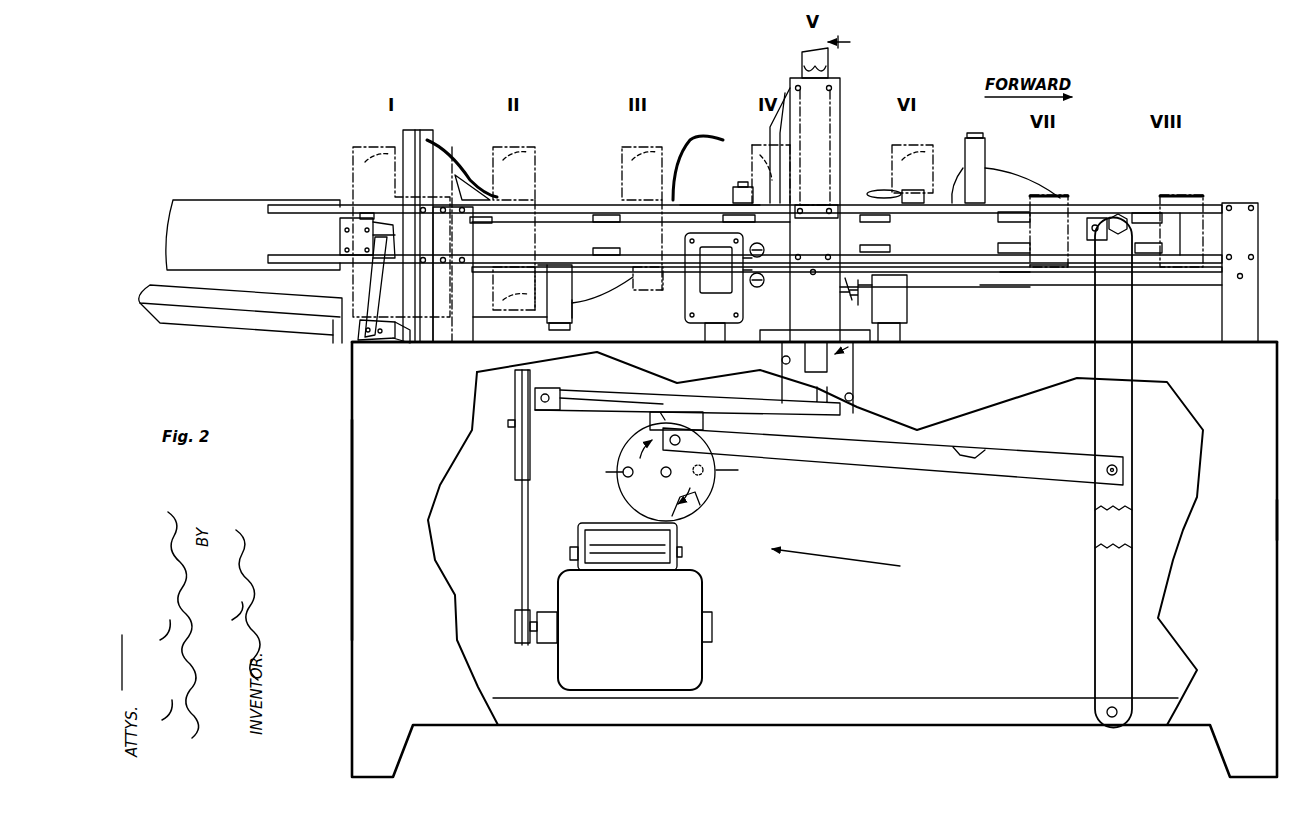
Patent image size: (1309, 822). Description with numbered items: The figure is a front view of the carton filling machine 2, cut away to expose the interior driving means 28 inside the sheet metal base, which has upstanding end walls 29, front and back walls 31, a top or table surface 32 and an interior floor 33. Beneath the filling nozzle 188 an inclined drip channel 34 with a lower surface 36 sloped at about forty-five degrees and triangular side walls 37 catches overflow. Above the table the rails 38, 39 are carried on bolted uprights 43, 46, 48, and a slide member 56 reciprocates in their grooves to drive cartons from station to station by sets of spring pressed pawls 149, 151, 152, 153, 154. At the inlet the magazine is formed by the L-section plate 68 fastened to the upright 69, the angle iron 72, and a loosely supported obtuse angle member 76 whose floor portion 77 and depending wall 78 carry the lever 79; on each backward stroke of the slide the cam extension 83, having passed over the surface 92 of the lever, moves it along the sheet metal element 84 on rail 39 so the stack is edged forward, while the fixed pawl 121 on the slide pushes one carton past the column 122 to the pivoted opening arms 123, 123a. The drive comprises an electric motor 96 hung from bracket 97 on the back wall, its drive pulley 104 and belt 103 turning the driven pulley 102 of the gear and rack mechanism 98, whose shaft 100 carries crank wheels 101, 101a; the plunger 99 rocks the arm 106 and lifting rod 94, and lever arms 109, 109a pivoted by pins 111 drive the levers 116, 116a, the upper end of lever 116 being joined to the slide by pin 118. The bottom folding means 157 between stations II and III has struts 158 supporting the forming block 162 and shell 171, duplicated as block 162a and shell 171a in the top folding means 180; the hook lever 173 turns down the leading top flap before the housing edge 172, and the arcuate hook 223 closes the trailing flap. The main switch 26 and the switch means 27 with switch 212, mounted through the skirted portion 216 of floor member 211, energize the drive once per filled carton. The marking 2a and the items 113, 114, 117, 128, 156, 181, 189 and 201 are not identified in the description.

The machine 2 is at (1277, 522).
The section line 2a is at (843, 189).
The manually operable main switch 26 is at (724, 287).
The automatically operable switch means 27 is at (910, 298).
The driving means 28 is at (870, 568).
The end walls 29 is at (352, 490).
The front and back walls 31 is at (352, 545).
The top or table surface 32 is at (615, 344).
The interior floor 33 is at (808, 697).
The inclined channel 34 is at (855, 364).
The lower surface 36 is at (840, 384).
The triangular side walls 37 is at (781, 357).
The rail 38 is at (302, 205).
The rail 39 is at (302, 263).
The upright 43 is at (450, 330).
The upright 46 is at (1245, 232).
The upright 48 is at (815, 210).
The slide member 56 is at (565, 225).
The L cross-section plate 68 is at (240, 236).
The upright 69 is at (407, 131).
The angle iron 72 is at (205, 297).
The obtuse angle member 76 is at (300, 325).
The floor portion 77 is at (400, 333).
The depending wall 78 is at (404, 335).
The lever member 79 is at (372, 286).
The downwardly extending portion 83 is at (342, 240).
The flat sheet metal element 84 is at (400, 255).
The surface 92 is at (385, 248).
The lifting rod 94 is at (812, 394).
The electric motor 96 is at (635, 630).
The bracket 97 is at (682, 543).
The combined gear and rack mechanism 98 is at (605, 445).
The reciprocable plunger 99 is at (672, 412).
The driven shaft 100 is at (664, 477).
The crank wheel 101 is at (628, 500).
The crank wheel 101a is at (700, 505).
The driven pulley 102 is at (530, 445).
The belt 103 is at (522, 522).
The drive pulley 104 is at (515, 618).
The arm 106 is at (612, 398).
The lever arm 109 is at (1043, 463).
The lever arm 109a is at (973, 451).
The pins 111 is at (681, 440).
The clamp 113 is at (852, 200).
The rail section 114 is at (686, 208).
The lever 116 is at (1112, 427).
The lever 116a is at (1118, 535).
The pivot 117 is at (1108, 709).
The pin 118 is at (1118, 213).
The catch lug or fixed pawl 121 is at (352, 213).
The upstanding column 122 is at (425, 131).
The arm 123 is at (518, 203).
The arm 123a is at (512, 270).
The cable 128 is at (460, 172).
The pawls 149 is at (486, 224).
The pawls 151 is at (612, 224).
The pawls 152 is at (745, 223).
The pawls 153 is at (880, 223).
The pawls 154 is at (1025, 220).
The clamp 156 is at (1150, 215).
The folding means 157 is at (576, 305).
The vertical supporting struts 158 is at (562, 297).
The forming block 162 is at (540, 268).
The forming block 162a is at (957, 170).
The shell 171 is at (602, 285).
The shell 171a is at (1013, 187).
The housing lower edge portion 172 is at (760, 160).
The hook-shaped lever 173 is at (688, 135).
The top folding means 180 is at (1036, 168).
The bracket 181 is at (740, 188).
The nozzle 188 is at (826, 63).
The curve 189 is at (805, 70).
The guide 201 is at (766, 125).
The floor member 211 is at (1010, 274).
The switch 212 is at (895, 300).
The skirted portion 216 is at (1035, 274).
The arcuate hook member 223 is at (880, 190).